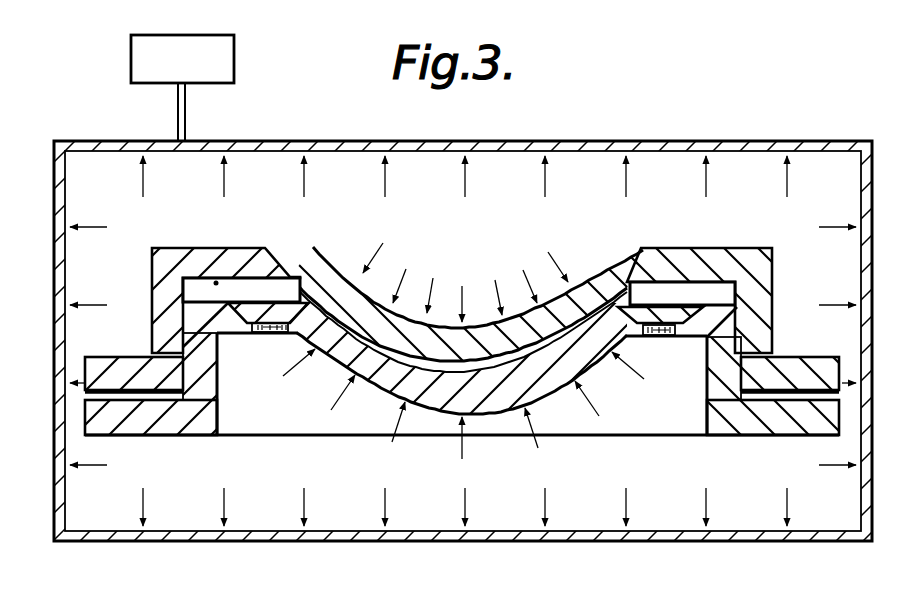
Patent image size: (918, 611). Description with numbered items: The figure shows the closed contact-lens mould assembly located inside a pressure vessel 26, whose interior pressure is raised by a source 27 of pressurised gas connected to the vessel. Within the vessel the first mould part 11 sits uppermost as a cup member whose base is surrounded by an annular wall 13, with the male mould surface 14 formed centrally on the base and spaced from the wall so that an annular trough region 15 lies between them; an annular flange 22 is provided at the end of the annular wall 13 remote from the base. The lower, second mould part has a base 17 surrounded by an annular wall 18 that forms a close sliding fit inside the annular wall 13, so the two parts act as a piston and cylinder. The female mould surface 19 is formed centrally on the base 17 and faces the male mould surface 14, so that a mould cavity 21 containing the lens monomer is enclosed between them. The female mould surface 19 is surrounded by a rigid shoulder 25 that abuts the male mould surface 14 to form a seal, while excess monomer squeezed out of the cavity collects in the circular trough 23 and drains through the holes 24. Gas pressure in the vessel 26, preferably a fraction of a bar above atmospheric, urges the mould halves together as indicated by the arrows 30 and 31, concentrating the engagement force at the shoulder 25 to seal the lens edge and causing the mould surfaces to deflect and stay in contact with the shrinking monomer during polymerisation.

The first mould part 11 is at (753, 305).
The annular wall 13 is at (158, 297).
The male mould surface 14 is at (397, 338).
The annular trough region 15 is at (212, 281).
The base 17 is at (683, 339).
The annular wall 18 is at (217, 403).
The female mould surface 19 is at (471, 373).
The mould cavity 21 is at (352, 372).
The annular flange 22 is at (104, 357).
The circular trough 23 is at (270, 307).
The holes 24 is at (269, 336).
The rigid shoulder 25 is at (633, 300).
The pressure vessel 26 is at (566, 541).
The source of pressurised gas 27 is at (197, 71).
The arrows 30 is at (447, 292).
The arrows 31 is at (372, 434).